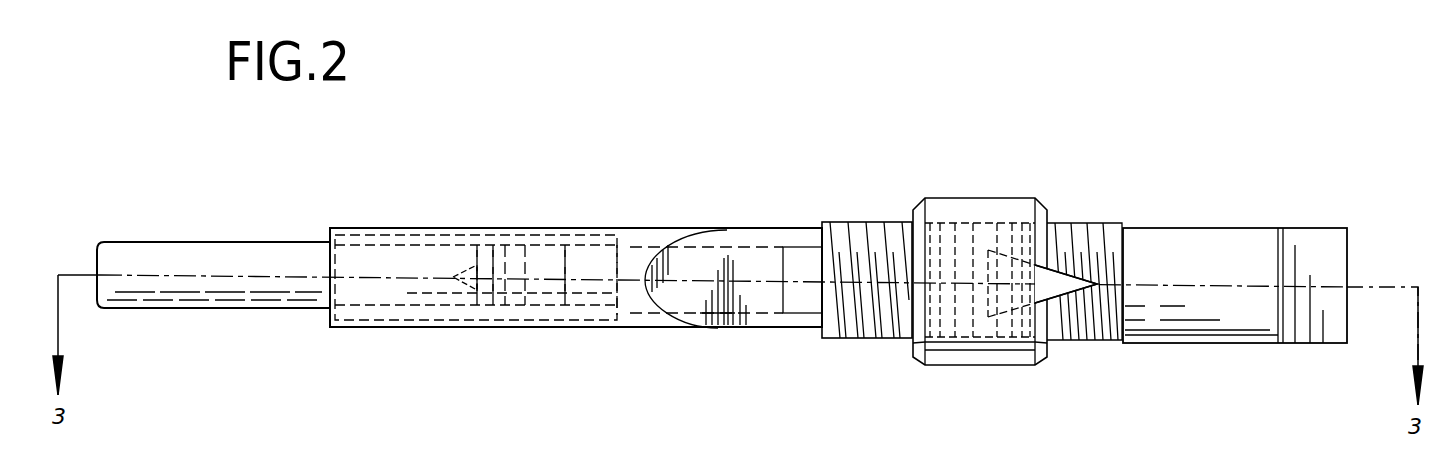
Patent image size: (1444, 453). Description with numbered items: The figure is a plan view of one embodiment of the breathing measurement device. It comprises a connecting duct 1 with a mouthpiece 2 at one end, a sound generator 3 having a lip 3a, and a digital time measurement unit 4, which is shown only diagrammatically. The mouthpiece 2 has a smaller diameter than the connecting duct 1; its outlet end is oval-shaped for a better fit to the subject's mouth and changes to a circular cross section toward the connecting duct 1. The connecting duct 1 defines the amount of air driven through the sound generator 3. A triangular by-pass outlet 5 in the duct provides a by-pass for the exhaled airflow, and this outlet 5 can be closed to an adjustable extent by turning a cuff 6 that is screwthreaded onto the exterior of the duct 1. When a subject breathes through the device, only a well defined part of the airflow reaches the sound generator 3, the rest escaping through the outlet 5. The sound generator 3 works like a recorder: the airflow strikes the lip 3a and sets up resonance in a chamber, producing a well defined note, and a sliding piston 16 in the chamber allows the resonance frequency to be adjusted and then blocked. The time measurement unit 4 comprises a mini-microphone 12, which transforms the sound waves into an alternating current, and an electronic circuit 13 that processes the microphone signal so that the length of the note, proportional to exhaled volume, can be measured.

The connecting duct 1 is at (378, 327).
The mouthpiece 2 is at (1228, 335).
The sound generator 3 is at (788, 222).
The lip 3a is at (775, 275).
The digital time measurement unit 4 is at (387, 226).
The triangular by-pass outlet 5 is at (1067, 280).
The cuff 6 is at (972, 355).
The mini-microphone 12 is at (592, 252).
The electronic circuit 13 is at (423, 252).
The sliding piston 16 is at (200, 287).